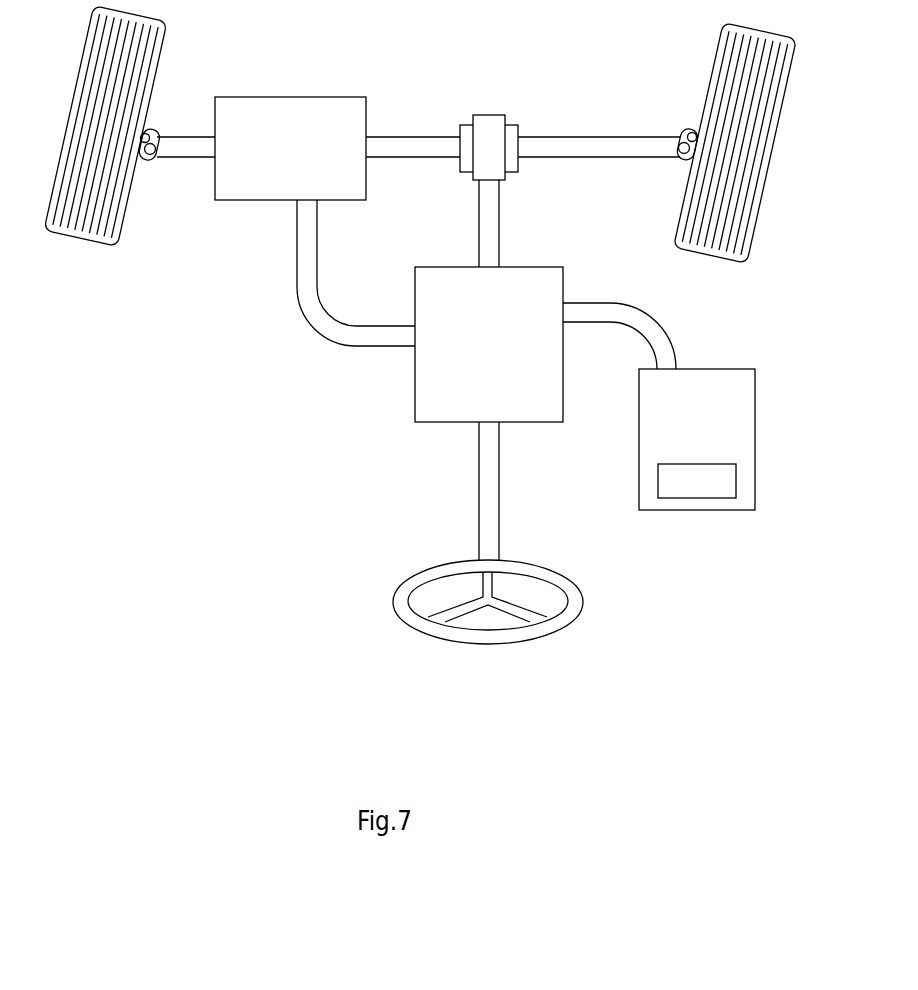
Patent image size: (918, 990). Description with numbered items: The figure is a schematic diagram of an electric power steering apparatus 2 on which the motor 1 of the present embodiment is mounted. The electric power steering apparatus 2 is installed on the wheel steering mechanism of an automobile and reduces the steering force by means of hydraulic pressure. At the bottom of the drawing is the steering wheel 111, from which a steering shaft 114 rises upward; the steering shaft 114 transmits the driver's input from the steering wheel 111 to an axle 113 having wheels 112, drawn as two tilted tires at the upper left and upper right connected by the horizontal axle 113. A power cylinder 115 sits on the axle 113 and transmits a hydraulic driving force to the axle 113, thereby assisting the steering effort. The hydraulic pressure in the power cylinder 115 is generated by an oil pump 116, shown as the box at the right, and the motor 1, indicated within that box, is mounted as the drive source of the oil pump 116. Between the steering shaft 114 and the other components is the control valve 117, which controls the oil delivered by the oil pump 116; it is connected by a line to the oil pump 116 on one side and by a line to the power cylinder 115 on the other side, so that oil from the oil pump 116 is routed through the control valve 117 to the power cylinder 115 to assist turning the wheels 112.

The motor 1 is at (705, 483).
The electric power steering apparatus 2 is at (400, 485).
The steering wheel 111 is at (475, 632).
The wheels 112 is at (88, 213).
The axle 113 is at (552, 147).
The steering shaft 114 is at (490, 490).
The power cylinder 115 is at (288, 117).
The oil pump 116 is at (737, 427).
The control valve 117 is at (438, 380).